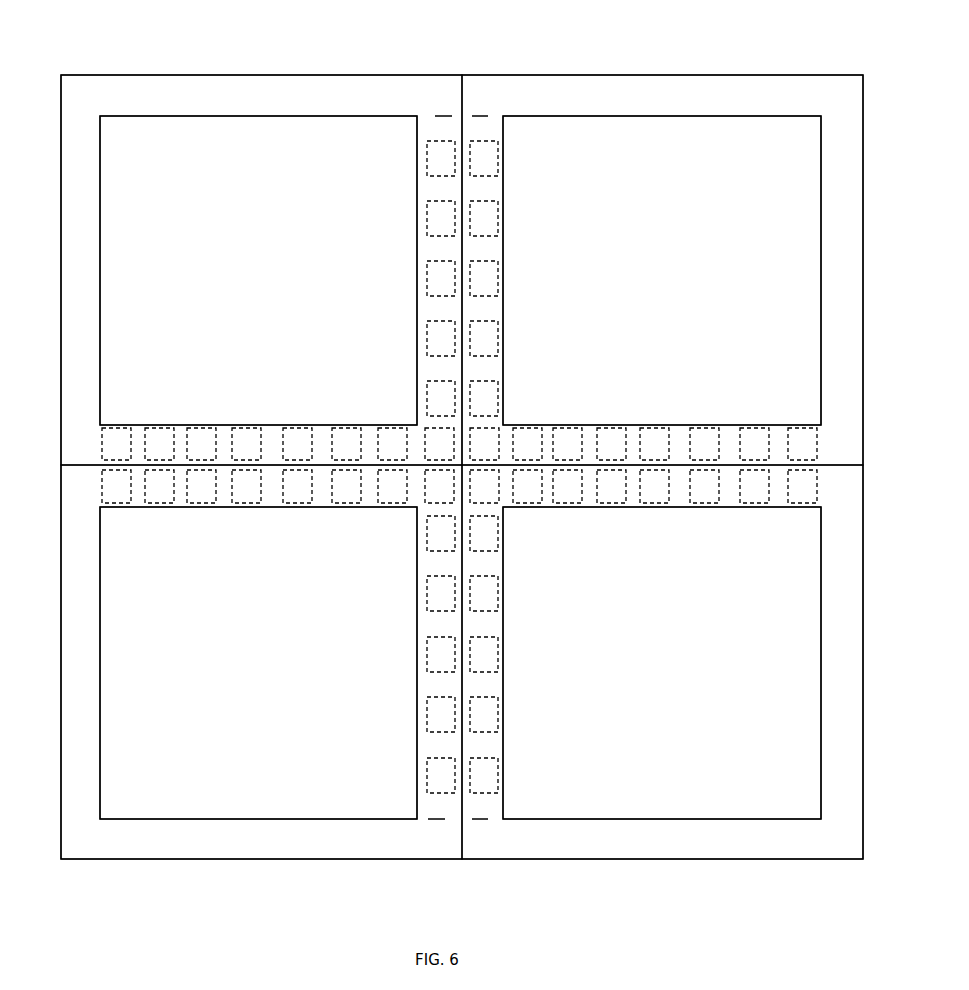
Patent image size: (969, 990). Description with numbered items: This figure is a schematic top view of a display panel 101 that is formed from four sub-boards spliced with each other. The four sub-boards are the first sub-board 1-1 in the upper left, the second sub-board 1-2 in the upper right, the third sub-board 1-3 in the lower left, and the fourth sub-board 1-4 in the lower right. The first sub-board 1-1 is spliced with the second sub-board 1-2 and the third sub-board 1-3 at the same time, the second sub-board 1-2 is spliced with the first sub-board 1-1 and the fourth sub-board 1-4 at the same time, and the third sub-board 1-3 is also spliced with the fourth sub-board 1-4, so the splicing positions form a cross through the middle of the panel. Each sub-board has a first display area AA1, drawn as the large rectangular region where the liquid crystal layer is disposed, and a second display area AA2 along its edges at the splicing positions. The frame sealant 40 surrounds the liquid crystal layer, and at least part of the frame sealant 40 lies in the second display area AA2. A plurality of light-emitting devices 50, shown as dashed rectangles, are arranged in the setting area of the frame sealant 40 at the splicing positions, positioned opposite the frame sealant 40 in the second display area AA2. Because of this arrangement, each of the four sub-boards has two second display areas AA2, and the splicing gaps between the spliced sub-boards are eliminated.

The display panel 101 is at (170, 49).
The first sub-board 1-1 is at (310, 75).
The second sub-board 1-2 is at (787, 75).
The third sub-board 1-3 is at (138, 859).
The fourth sub-board 1-4 is at (615, 859).
The frame sealant 40 is at (240, 103).
The first display area AA1 is at (177, 145).
The second display area AA2 is at (440, 113).
The light-emitting device 50 is at (485, 138).